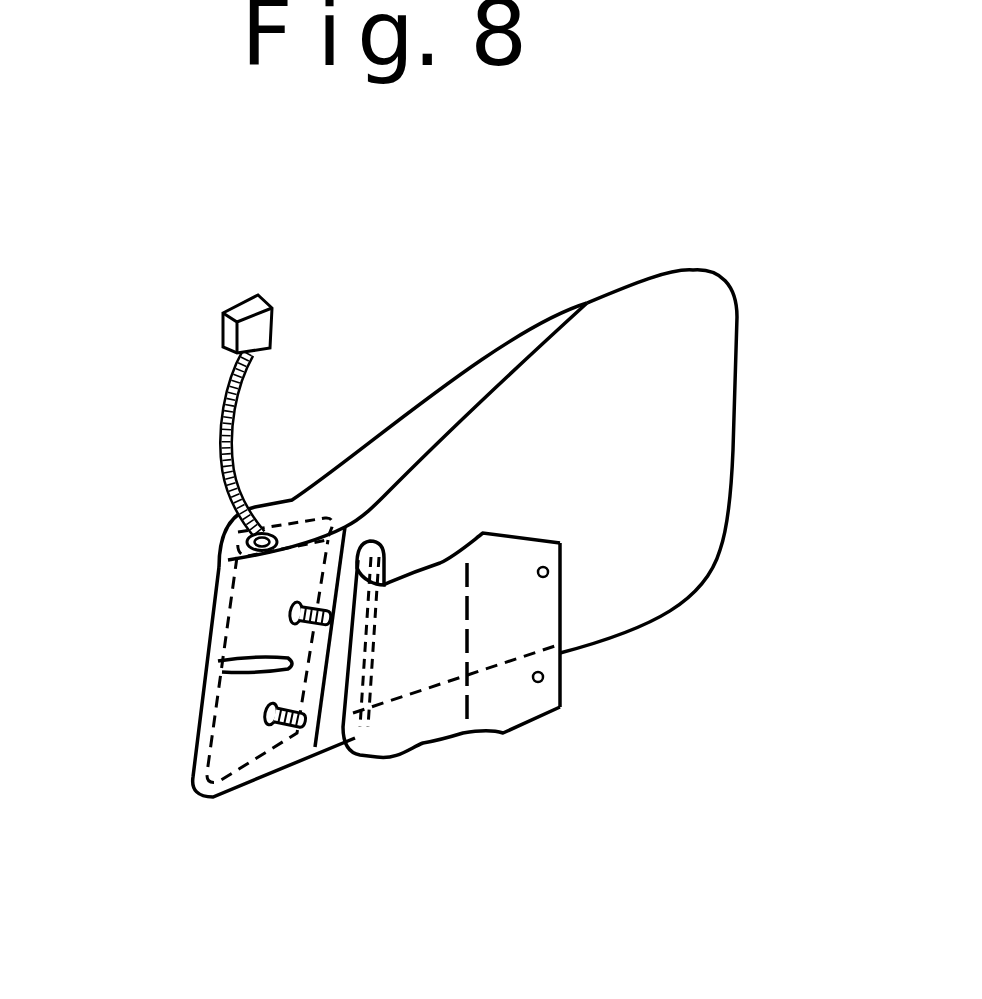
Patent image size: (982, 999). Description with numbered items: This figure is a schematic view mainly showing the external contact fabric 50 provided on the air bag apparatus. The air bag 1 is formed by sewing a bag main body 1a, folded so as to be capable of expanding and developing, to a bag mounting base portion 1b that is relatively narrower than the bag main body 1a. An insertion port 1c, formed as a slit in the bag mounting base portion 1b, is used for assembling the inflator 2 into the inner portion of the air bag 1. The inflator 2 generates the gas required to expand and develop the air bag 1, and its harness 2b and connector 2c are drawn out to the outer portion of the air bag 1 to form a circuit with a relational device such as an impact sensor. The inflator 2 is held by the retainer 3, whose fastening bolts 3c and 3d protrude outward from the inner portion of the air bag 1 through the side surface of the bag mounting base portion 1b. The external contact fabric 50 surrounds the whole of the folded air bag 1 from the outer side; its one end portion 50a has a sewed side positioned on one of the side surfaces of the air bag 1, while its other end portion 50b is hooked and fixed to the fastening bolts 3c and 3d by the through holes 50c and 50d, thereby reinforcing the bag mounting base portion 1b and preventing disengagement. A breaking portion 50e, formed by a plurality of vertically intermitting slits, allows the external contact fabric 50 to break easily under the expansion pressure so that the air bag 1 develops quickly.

The air bag 1 is at (533, 314).
The bag main body 1a is at (707, 406).
The bag mounting base portion 1b is at (252, 790).
The insertion port 1c is at (213, 661).
The inflator 2 is at (294, 503).
The harness 2b is at (227, 421).
The connector 2c is at (263, 323).
The retainer 3 is at (225, 590).
The fastening bolt 3c is at (300, 727).
The fastening bolt 3d is at (327, 613).
The external contact fabric 50 is at (425, 750).
The one end portion 50a is at (378, 538).
The other end portion 50b is at (563, 665).
The through hole 50c is at (538, 684).
The through hole 50d is at (546, 578).
The breaking portion 50e is at (467, 572).